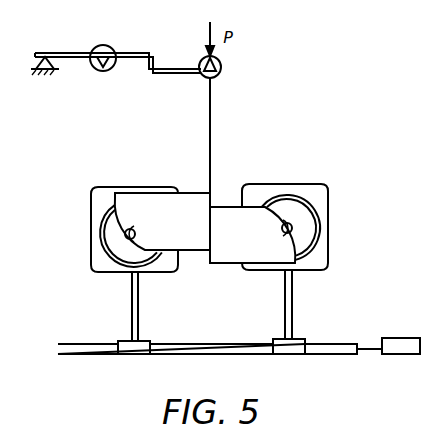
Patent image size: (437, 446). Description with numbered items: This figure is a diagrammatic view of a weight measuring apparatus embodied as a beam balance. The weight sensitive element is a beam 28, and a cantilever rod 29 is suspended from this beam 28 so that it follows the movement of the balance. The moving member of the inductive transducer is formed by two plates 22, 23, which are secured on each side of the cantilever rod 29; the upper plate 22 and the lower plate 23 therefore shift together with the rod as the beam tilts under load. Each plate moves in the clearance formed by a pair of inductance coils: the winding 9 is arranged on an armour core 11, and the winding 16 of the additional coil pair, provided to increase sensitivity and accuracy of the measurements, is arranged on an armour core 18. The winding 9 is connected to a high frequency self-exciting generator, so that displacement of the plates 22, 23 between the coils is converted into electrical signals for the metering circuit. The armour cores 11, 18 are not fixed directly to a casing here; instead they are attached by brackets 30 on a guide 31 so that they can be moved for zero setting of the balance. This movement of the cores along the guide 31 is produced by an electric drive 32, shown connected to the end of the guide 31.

The winding 9 is at (117, 240).
The armour core 11 is at (104, 219).
The winding 16 is at (302, 212).
The armour core 18 is at (318, 232).
The plate 22 is at (185, 199).
The plate 23 is at (232, 256).
The beam 28 is at (175, 66).
The cantilever rod 29 is at (212, 110).
The bracket 30 is at (138, 305).
The guide 31 is at (182, 344).
The electric drive 32 is at (395, 344).